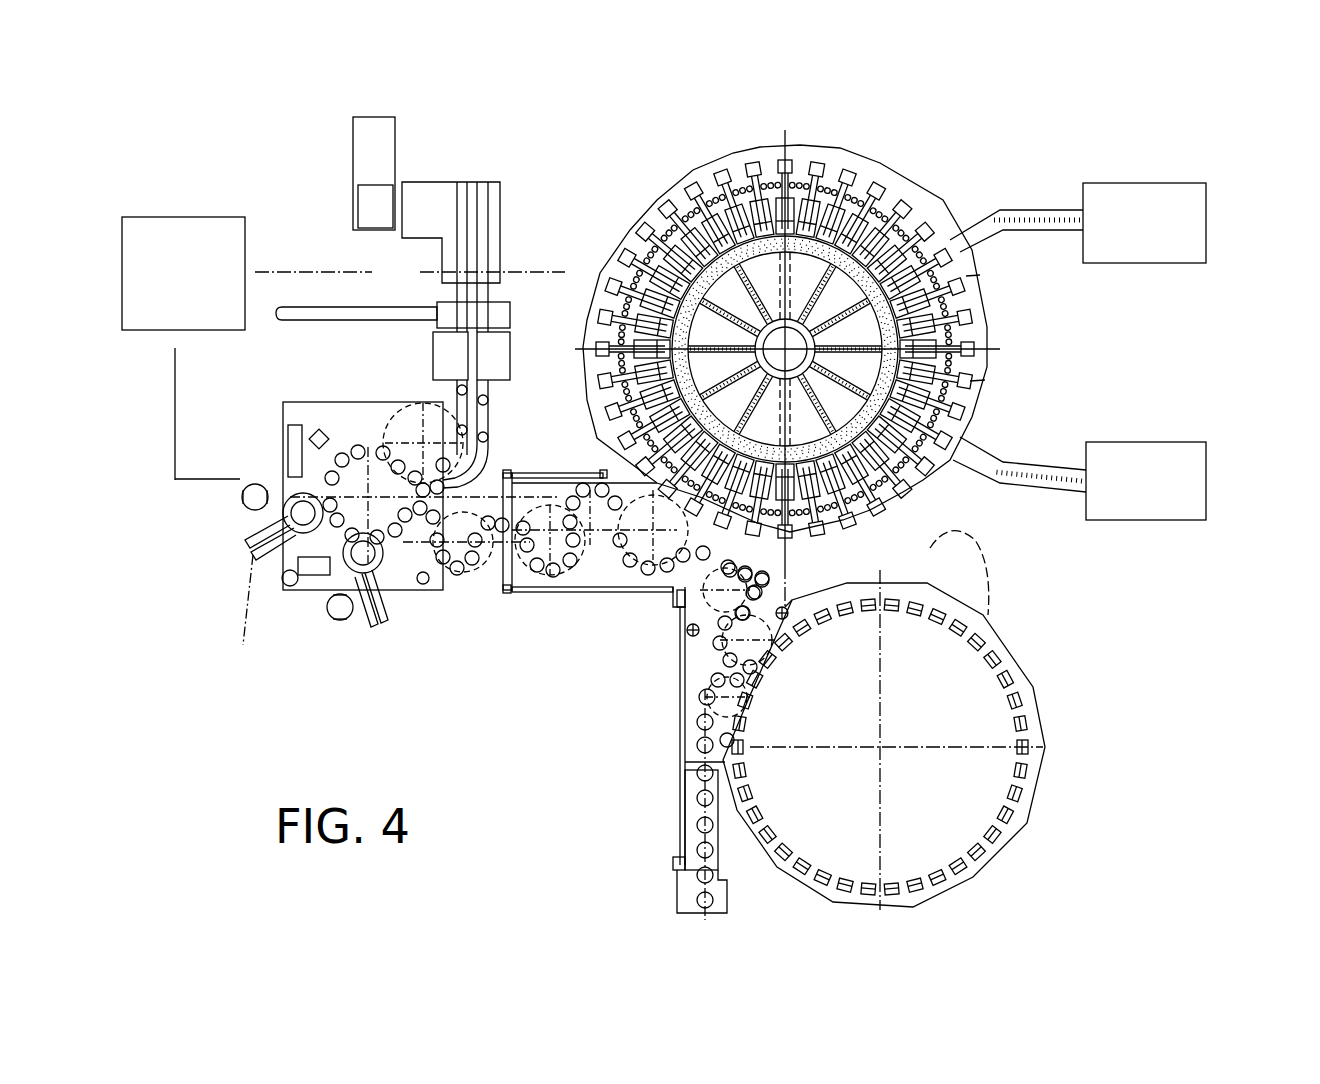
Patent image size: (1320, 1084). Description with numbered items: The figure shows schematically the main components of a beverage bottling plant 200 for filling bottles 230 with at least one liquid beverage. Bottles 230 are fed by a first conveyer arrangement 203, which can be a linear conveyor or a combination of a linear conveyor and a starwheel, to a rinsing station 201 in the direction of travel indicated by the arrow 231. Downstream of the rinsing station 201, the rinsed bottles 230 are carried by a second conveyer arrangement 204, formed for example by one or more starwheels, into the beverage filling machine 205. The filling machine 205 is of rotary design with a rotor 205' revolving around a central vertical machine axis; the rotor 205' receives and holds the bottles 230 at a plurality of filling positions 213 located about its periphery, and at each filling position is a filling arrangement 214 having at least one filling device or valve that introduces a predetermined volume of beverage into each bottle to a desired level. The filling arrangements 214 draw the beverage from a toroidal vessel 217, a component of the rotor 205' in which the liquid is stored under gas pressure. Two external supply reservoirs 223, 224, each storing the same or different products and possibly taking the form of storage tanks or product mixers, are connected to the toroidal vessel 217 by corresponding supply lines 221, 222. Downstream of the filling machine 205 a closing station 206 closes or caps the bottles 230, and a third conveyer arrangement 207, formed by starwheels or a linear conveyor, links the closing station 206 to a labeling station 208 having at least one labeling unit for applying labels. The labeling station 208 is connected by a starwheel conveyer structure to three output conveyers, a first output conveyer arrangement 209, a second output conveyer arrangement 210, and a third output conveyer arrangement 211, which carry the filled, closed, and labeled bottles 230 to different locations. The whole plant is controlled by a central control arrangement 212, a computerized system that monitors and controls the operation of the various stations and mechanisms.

The filling system 200 is at (651, 157).
The rinsing station 201 is at (1058, 634).
The first conveyer arrangement 203 is at (722, 830).
The second conveyer arrangement 204 is at (693, 665).
The beverage filling machine 205 is at (849, 347).
The rotor 205' is at (790, 325).
The closing station 206 is at (570, 470).
The third conveyer arrangement 207 is at (513, 603).
The labeling station 208 is at (316, 618).
The first output conveyer arrangement 209 is at (490, 300).
The second output conveyer arrangement 210 is at (450, 297).
The third output conveyer arrangement 211 is at (293, 322).
The central control arrangement 212 is at (193, 291).
The filling positions 213 is at (966, 278).
The filling arrangement 214 is at (975, 380).
The toroidal vessel 217 is at (907, 517).
The supply line 221 is at (1025, 208).
The supply line 222 is at (1033, 462).
The external supply reservoir 223 is at (1195, 232).
The external supply reservoir 224 is at (1205, 490).
The bottles 230 is at (710, 847).
The arrow 231 is at (660, 817).